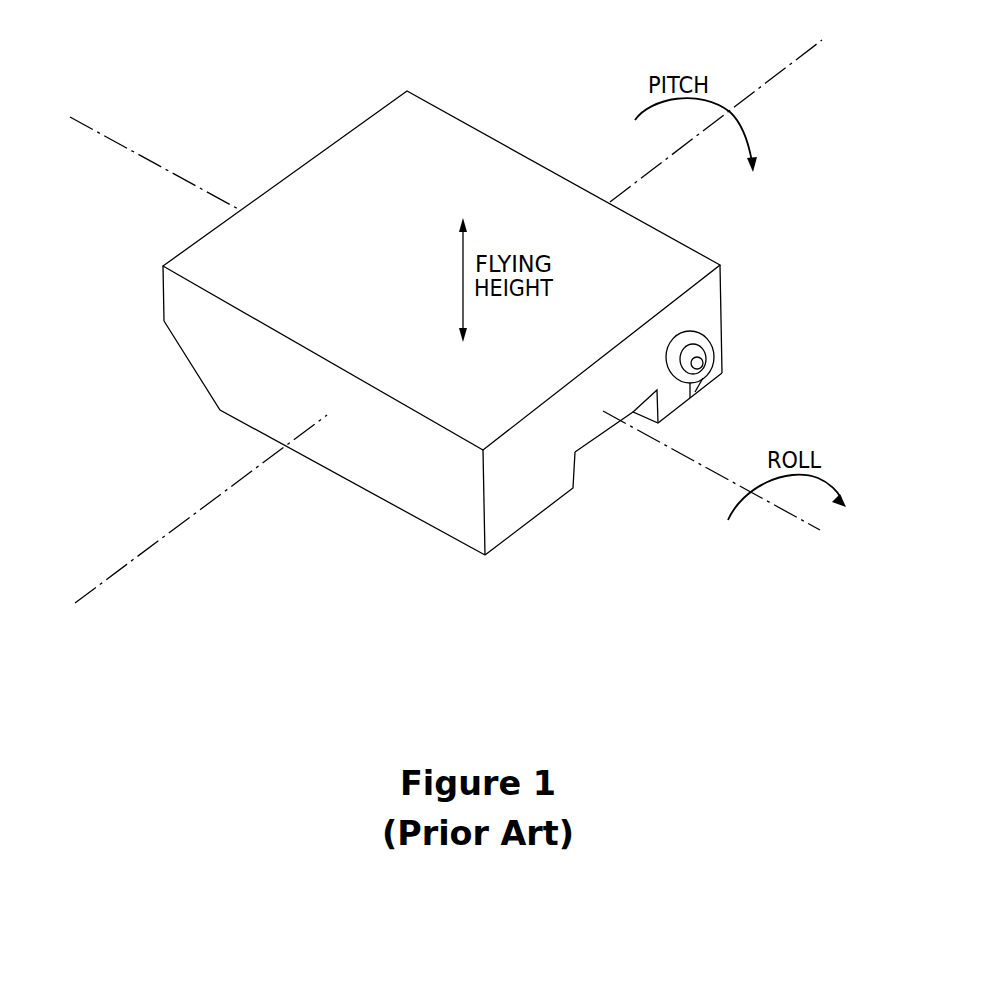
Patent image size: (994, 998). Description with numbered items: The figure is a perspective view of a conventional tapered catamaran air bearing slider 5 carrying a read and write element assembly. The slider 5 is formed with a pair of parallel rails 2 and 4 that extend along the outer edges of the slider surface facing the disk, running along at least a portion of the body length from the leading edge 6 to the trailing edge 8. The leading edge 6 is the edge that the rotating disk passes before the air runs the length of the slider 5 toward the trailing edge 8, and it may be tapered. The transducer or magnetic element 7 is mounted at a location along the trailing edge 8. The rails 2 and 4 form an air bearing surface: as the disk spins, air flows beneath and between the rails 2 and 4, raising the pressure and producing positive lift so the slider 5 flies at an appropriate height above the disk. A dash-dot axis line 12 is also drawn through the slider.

The rail 2 is at (680, 408).
The rail 4 is at (543, 512).
The catamaran slider 5 is at (481, 92).
The leading edge 6 is at (162, 295).
The transducer or magnetic element 7 is at (713, 353).
The trailing edge 8 is at (722, 298).
The pitch/roll axis 12 is at (93, 128).